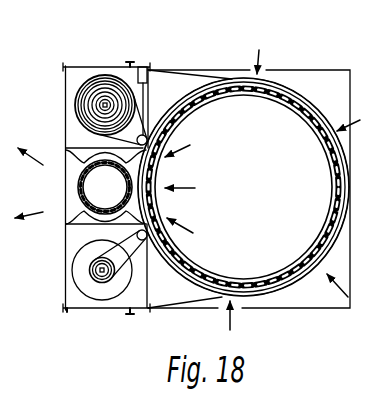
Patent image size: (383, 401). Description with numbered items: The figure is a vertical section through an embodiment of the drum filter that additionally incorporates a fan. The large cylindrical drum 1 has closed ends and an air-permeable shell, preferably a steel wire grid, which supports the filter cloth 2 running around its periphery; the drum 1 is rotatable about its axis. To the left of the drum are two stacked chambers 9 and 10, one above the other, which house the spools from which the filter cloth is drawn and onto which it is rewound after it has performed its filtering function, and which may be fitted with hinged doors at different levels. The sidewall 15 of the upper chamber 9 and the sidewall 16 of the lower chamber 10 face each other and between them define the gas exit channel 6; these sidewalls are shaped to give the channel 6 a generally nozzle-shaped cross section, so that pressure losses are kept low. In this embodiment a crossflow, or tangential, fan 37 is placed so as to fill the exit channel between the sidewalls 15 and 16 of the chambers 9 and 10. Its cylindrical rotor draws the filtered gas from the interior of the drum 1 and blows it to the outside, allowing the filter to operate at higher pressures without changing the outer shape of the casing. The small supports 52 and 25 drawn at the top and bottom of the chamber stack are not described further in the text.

The cylindrical drum 1 is at (278, 107).
The filter cloth 2 is at (338, 150).
The chamber 9 is at (75, 77).
The sidewall 15 is at (77, 147).
The crossflow (tangential) fan 37 is at (100, 186).
The gas exit channel 6 is at (68, 207).
The sidewall 16 is at (80, 226).
The chamber 10 is at (80, 287).
The upper support 52 is at (80, 66).
The lower support 25 is at (78, 308).